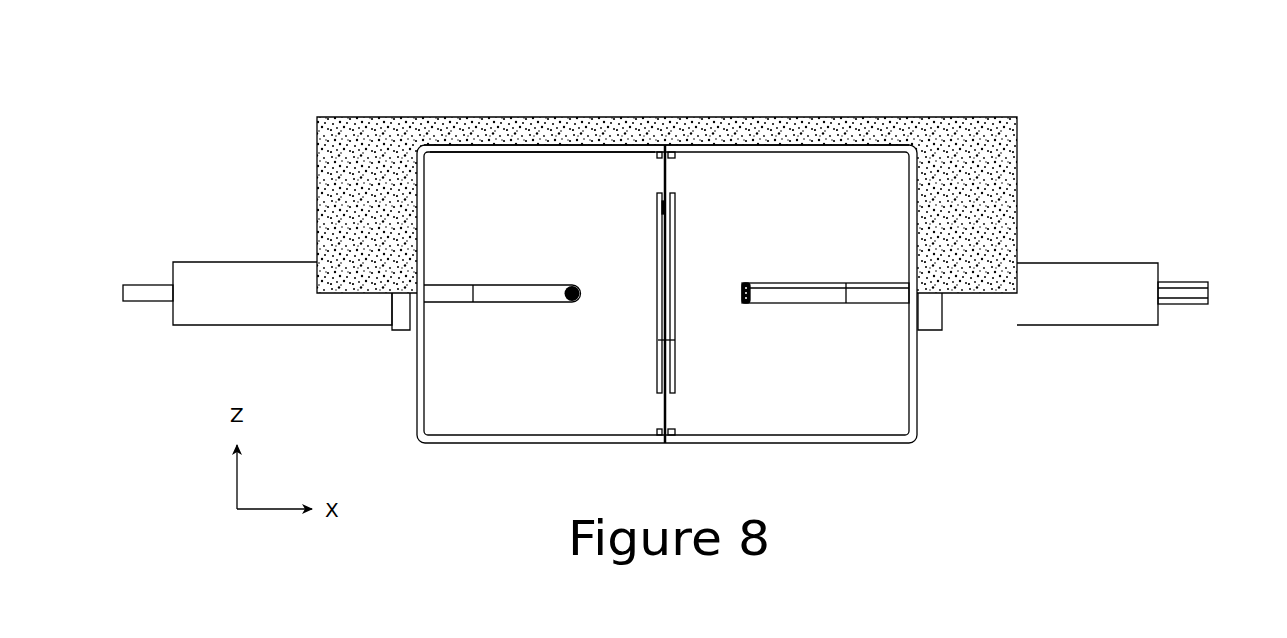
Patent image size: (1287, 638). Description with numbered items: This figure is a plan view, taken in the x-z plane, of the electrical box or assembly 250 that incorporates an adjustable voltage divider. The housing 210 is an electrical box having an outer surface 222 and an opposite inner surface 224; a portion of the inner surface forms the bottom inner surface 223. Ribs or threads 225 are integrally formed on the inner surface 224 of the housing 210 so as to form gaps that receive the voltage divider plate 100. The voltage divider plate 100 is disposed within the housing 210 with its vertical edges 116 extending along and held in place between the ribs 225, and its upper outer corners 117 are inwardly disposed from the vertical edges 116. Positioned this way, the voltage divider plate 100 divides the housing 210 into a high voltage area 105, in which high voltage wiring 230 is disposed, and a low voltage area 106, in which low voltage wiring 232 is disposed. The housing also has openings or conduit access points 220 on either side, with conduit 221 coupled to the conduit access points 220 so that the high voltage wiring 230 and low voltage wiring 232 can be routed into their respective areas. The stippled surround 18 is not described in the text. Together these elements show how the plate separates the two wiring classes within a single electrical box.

The adjustable voltage divider assembly 250 is at (226, 104).
The low voltage wiring 232 is at (138, 295).
The conduit 221 is at (272, 306).
The outer surface 222 is at (520, 117).
The vertical edges 116 is at (665, 147).
The inner surface 224 is at (515, 153).
The upper outer corners 117 is at (661, 214).
The ribs or threads 225 is at (676, 155).
The insulation 18 is at (986, 212).
The high voltage wiring 230 is at (805, 297).
The voltage divider plate 100 is at (657, 344).
The bottom inner surface 223 is at (838, 373).
The conduit access points 220 is at (942, 310).
The housing 210 is at (392, 401).
The low voltage area 106 is at (497, 412).
The high voltage area 105 is at (880, 406).